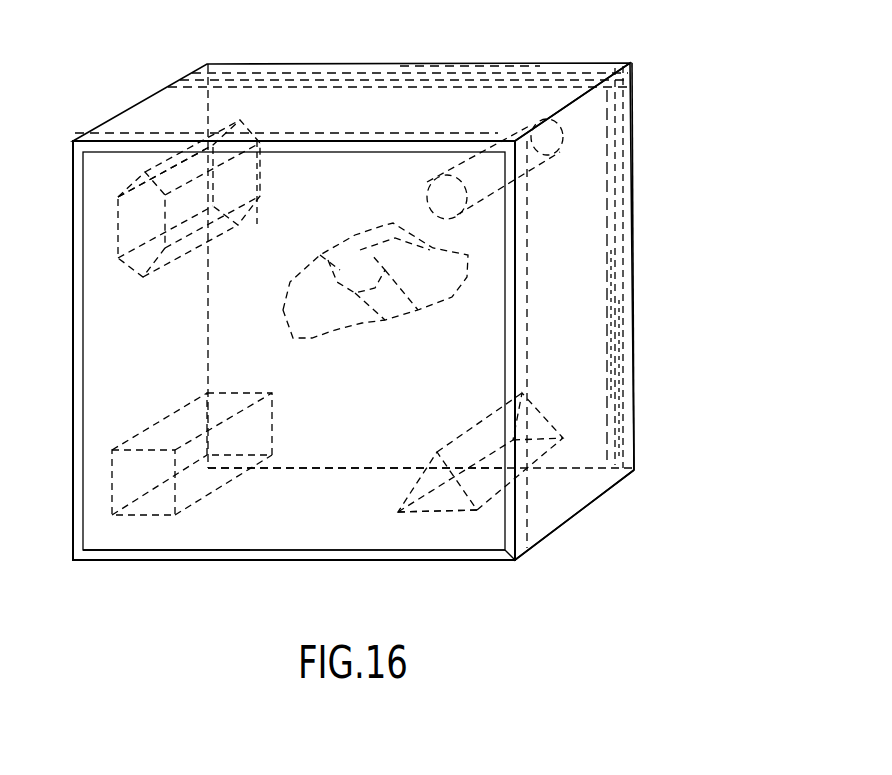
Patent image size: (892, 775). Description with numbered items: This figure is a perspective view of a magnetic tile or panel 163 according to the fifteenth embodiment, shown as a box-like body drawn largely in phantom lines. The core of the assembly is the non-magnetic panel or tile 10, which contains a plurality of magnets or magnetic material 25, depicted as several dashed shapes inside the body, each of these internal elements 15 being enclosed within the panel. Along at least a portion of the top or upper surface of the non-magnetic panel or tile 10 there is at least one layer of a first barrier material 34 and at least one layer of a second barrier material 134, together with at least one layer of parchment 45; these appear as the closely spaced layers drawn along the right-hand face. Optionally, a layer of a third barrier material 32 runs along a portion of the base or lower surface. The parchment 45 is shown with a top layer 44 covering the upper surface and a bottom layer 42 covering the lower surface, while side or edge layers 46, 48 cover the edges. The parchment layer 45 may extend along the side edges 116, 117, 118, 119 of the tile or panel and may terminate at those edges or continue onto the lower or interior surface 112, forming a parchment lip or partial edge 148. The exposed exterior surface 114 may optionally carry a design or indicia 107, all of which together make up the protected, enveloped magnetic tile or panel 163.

The magnetic tile or panel 163 is at (392, 34).
The fourth side or inner edge 119 is at (367, 103).
The side or edge layer of parchment material 48 is at (500, 100).
The design or indicia 107 is at (632, 165).
The second or upper or face or front or exposed or exterior surface 114 is at (632, 210).
The parchment 45 is at (632, 236).
The second or side or top layer of parchment material 44 is at (626, 270).
The first barrier material 34 is at (622, 340).
The second barrier material 134 is at (615, 385).
The side or edge layer of parchment material 46 is at (600, 430).
The first side or inner edge 116 is at (585, 495).
The third barrier material 32 is at (518, 556).
The second side or inner edge 117 is at (428, 561).
The first or lower or bottom or back or concealed or interior surface 112 is at (355, 540).
The parchment edge or lip or extension or partial edge 148 is at (197, 553).
The first or side or bottom layer of parchment material 42 is at (107, 558).
The third side or inner edge 118 is at (72, 450).
The non-magnetic panel or tile 10 is at (351, 409).
The fragile object 15 is at (425, 195).
The magnet or magnetic material 25 is at (352, 252).